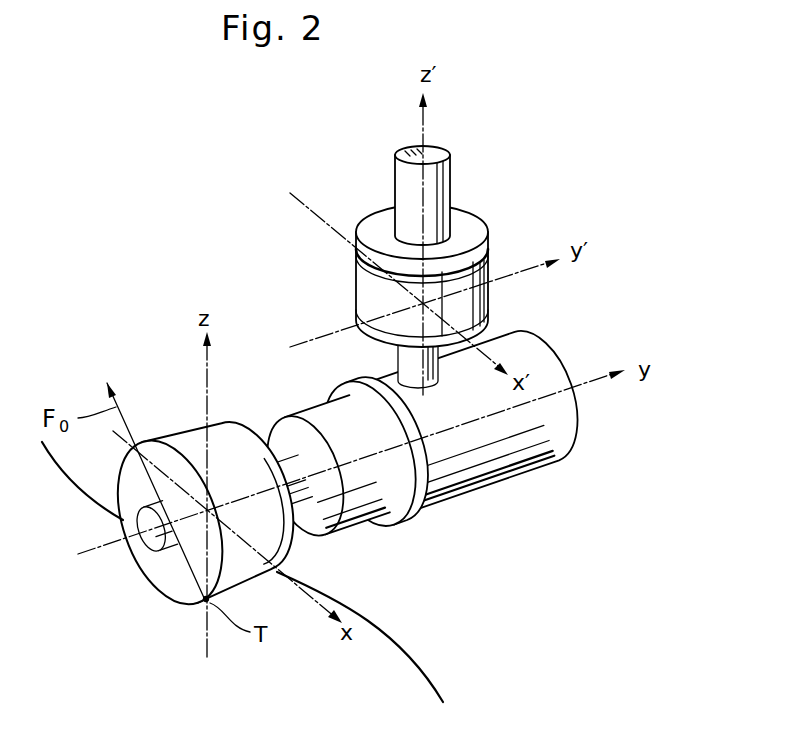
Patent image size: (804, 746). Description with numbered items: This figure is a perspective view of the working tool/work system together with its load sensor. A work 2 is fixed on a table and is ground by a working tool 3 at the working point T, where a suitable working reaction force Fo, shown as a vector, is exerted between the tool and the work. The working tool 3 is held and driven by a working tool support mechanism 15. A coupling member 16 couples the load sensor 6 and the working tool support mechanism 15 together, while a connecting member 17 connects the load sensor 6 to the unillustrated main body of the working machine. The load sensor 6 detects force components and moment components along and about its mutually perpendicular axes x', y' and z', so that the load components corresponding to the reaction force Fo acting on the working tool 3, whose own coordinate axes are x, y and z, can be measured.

The work 2 is at (393, 655).
The working tool 3 is at (185, 436).
The load sensor 6 is at (488, 297).
The working tool support mechanism 15 is at (517, 513).
The coupling member 16 is at (493, 450).
The connecting member 17 is at (450, 175).